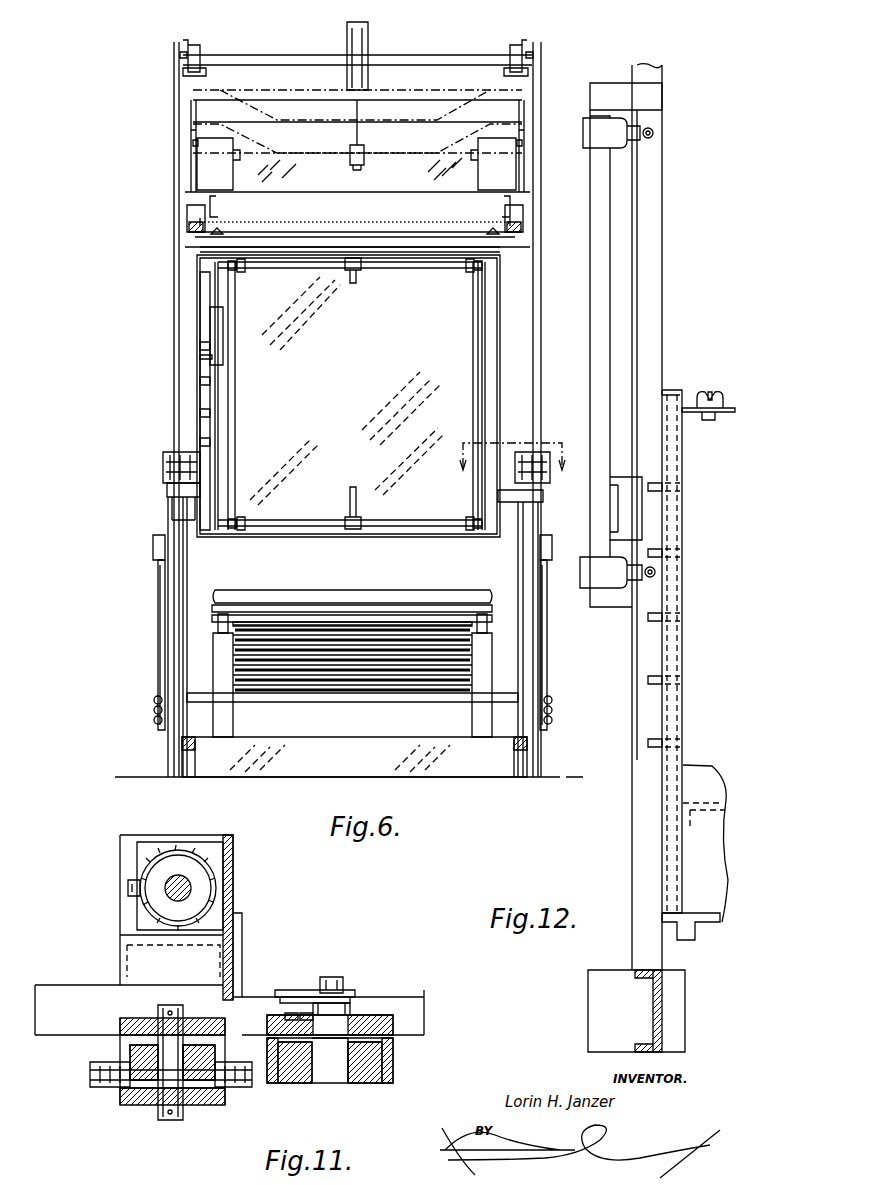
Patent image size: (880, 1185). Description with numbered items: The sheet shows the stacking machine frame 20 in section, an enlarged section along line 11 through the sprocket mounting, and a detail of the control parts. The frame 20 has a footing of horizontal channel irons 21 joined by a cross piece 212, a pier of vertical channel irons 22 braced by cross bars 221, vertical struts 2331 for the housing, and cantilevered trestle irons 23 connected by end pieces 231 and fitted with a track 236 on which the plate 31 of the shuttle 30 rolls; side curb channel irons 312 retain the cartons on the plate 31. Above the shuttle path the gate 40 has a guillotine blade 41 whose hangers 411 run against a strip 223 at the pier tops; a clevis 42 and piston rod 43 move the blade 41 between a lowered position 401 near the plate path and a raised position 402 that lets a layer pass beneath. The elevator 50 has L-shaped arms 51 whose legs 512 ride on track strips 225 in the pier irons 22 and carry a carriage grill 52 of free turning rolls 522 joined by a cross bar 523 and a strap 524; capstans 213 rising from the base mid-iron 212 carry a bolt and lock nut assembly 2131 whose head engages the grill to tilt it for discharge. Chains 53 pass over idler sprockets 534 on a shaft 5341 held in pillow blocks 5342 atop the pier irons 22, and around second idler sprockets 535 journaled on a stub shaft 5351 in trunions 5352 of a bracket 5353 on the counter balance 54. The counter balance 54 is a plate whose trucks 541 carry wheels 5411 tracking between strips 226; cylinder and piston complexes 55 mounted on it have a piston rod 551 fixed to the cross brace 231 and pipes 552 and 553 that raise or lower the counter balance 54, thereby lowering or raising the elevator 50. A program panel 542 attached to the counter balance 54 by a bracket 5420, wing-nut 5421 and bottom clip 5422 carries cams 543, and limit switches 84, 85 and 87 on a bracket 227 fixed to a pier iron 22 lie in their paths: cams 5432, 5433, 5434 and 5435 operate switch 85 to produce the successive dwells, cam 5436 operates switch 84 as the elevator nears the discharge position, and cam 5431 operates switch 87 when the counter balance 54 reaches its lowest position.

In FIG. 6, the frame 20 is at (157, 287).
In FIG. 11, the frame 20 is at (433, 1040).
In FIG. 6, the channel irons 21 is at (182, 749).
In FIG. 12, the channel irons 21 is at (615, 1003).
In FIG. 11, the channel irons 21 is at (405, 1011).
In FIG. 6, the pier irons 22 is at (170, 548).
In FIG. 11, the pier irons 22 is at (395, 1058).
In FIG. 6, the trestle irons 23 is at (195, 215).
In FIG. 6, the shuttle 30 is at (290, 216).
In FIG. 6, the plate 31 is at (340, 225).
In FIG. 6, the upper panel 40 is at (304, 166).
In FIG. 6, the blade 41 is at (400, 180).
In FIG. 6, the clevis 42 is at (365, 152).
In FIG. 6, the piston rod 43 is at (360, 134).
In FIG. 6, the elevator 50 is at (144, 603).
In FIG. 6, the arms 51 is at (158, 626).
In FIG. 6, the carriage grill 52 is at (245, 583).
In FIG. 6, the chain 53 is at (180, 95).
In FIG. 6, the counter balance 54 is at (305, 497).
In FIG. 12, the counter balance 54 is at (702, 800).
In FIG. 11, the counter balance 54 is at (228, 872).
In FIG. 6, the cylinder and piston complexes 55 is at (482, 340).
In FIG. 11, the cylinder and piston complexes 55 is at (148, 875).
In FIG. 12, the limit switch 84 is at (605, 128).
In FIG. 12, the limit switch 85 is at (630, 512).
In FIG. 12, the limit switch 87 is at (605, 572).
In FIG. 6, the section line 11 is at (512, 469).
In FIG. 6, the cross piece 212 is at (250, 757).
In FIG. 6, the capstans 213 is at (222, 660).
In FIG. 6, the cross bars 221 is at (400, 100).
In FIG. 6, the strip 223 is at (190, 133).
In FIG. 11, the track strips 225 is at (295, 1083).
In FIG. 6, the strips 226 is at (180, 571).
In FIG. 11, the strips 226 is at (290, 1022).
In FIG. 12, the bracket 227 is at (600, 270).
In FIG. 6, the end pieces 231 is at (265, 262).
In FIG. 6, the track 236 is at (190, 231).
In FIG. 6, the channel irons 312 is at (218, 204).
In FIG. 6, the position 401 is at (450, 160).
In FIG. 6, the position 402 is at (295, 110).
In FIG. 6, the hangers 411 is at (215, 160).
In FIG. 6, the leg 512 is at (160, 648).
In FIG. 6, the rolls 522 is at (338, 620).
In FIG. 6, the cross bar 523 is at (305, 702).
In FIG. 6, the strap 524 is at (382, 610).
In FIG. 6, the idler sprocket 534 is at (183, 55).
In FIG. 6, the second idler sprocket 535 is at (180, 470).
In FIG. 11, the second idler sprocket 535 is at (120, 1090).
In FIG. 11, the trucks 541 is at (236, 952).
In FIG. 6, the program panel 542 is at (200, 300).
In FIG. 12, the program panel 542 is at (672, 441).
In FIG. 6, the cams 543 is at (200, 441).
In FIG. 12, the cams 543 is at (735, 716).
In FIG. 6, the piston rod 551 is at (220, 256).
In FIG. 11, the piston rod 551 is at (165, 895).
In FIG. 6, the pipe 552 is at (360, 290).
In FIG. 6, the pipe 553 is at (365, 505).
In FIG. 11, the pipe 553 is at (128, 886).
In FIG. 6, the threaded bolt and lock nut assembly 2131 is at (218, 624).
In FIG. 12, the struts 2331 is at (643, 205).
In FIG. 6, the shaft 5341 is at (435, 49).
In FIG. 6, the pillow blocks 5342 is at (200, 50).
In FIG. 11, the shaft 5351 is at (170, 1090).
In FIG. 6, the trunions 5352 is at (192, 487).
In FIG. 11, the trunions 5352 is at (130, 1022).
In FIG. 6, the bracket 5353 is at (185, 495).
In FIG. 11, the bracket 5353 is at (150, 968).
In FIG. 11, the wheels 5411 is at (333, 1000).
In FIG. 12, the bracket 5420 is at (690, 405).
In FIG. 12, the wing-nut 5421 is at (710, 392).
In FIG. 12, the bottom clip 5422 is at (693, 940).
In FIG. 6, the cam 5431 is at (205, 357).
In FIG. 12, the cam 5431 is at (656, 572).
In FIG. 6, the cam 5432 is at (200, 346).
In FIG. 12, the cam 5432 is at (662, 553).
In FIG. 6, the cam 5433 is at (200, 381).
In FIG. 12, the cam 5433 is at (662, 620).
In FIG. 6, the cam 5434 is at (200, 413).
In FIG. 12, the cam 5434 is at (662, 680).
In FIG. 12, the cam 5435 is at (662, 743).
In FIG. 6, the cam 5436 is at (210, 322).
In FIG. 12, the cam 5436 is at (662, 487).